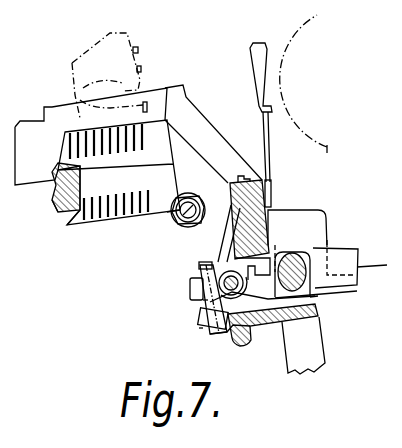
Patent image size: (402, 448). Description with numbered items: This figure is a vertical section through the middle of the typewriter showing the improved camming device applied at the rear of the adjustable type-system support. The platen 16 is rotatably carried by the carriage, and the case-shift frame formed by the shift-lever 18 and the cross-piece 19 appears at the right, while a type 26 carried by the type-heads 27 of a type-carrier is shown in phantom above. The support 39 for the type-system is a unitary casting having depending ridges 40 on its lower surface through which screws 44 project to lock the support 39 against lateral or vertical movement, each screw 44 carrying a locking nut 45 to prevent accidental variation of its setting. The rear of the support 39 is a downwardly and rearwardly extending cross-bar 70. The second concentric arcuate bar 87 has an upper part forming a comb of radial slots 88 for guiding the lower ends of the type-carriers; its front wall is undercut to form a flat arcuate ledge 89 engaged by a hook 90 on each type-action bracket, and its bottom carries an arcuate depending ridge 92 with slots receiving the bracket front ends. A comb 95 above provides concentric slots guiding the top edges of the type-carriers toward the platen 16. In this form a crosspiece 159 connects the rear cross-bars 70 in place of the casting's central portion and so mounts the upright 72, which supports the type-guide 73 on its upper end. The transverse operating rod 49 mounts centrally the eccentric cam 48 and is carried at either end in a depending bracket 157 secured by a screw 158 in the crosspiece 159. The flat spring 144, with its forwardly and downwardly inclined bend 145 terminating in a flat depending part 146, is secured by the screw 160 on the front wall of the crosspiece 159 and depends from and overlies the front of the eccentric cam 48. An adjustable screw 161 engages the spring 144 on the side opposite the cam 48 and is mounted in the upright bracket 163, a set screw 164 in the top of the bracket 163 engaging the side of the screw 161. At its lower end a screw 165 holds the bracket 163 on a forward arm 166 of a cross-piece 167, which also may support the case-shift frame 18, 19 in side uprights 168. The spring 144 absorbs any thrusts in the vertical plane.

The platen 16 is at (310, 93).
The shift-lever 18 is at (357, 270).
The cross-piece 19 is at (312, 232).
The type 26 is at (135, 48).
The type-heads 27 is at (112, 112).
The support 39 is at (51, 107).
The depending ridge 40 is at (163, 217).
The screws 44 is at (187, 226).
The locking nut 45 is at (189, 190).
The eccentric cam 48 is at (240, 334).
The transverse operating rod 49 is at (246, 291).
The cross-bar 70 is at (213, 130).
The upright 72 is at (268, 148).
The type-guide 73 is at (252, 57).
The second concentric arcuate bar 87 is at (119, 172).
The radial slots 88 is at (65, 148).
The flat arcuate ledge 89 is at (56, 190).
The hook 90 is at (57, 207).
The arcuate depending ridge 92 is at (105, 225).
The comb 95 is at (75, 226).
The flat spring 144 is at (200, 312).
The bend 145 is at (220, 250).
The flat depending part 146 is at (228, 183).
The depending bracket 157 is at (288, 250).
The screw 158 is at (238, 177).
The crosspiece 159 is at (268, 207).
The screw 160 is at (225, 223).
The adjustable screw 161 is at (191, 288).
The upright bracket 163 is at (200, 299).
The set screw 164 is at (199, 268).
The screw 165 is at (202, 328).
The forward arm 166 is at (220, 333).
The cross-piece 167 is at (263, 322).
The side uprights 168 is at (316, 295).